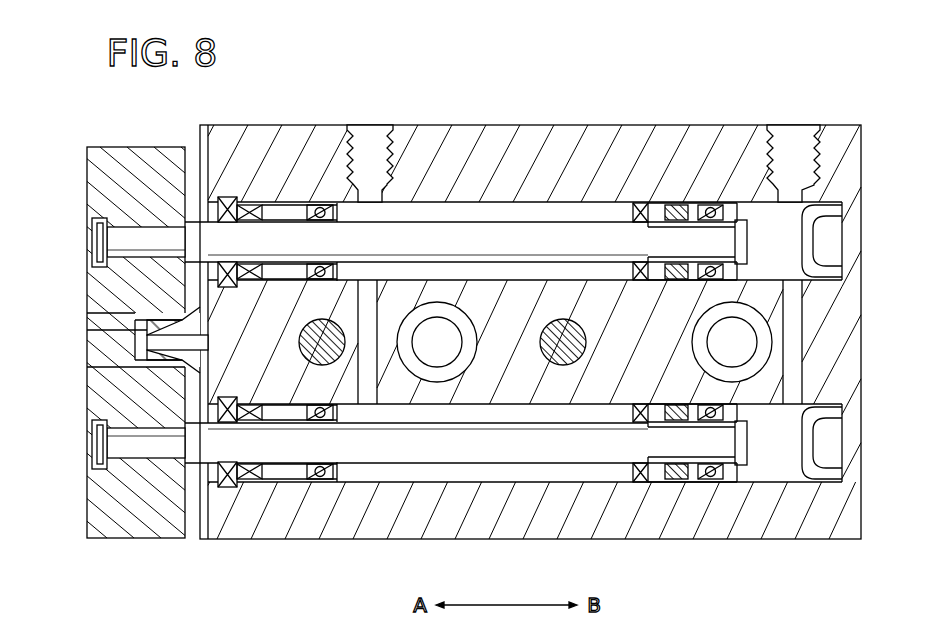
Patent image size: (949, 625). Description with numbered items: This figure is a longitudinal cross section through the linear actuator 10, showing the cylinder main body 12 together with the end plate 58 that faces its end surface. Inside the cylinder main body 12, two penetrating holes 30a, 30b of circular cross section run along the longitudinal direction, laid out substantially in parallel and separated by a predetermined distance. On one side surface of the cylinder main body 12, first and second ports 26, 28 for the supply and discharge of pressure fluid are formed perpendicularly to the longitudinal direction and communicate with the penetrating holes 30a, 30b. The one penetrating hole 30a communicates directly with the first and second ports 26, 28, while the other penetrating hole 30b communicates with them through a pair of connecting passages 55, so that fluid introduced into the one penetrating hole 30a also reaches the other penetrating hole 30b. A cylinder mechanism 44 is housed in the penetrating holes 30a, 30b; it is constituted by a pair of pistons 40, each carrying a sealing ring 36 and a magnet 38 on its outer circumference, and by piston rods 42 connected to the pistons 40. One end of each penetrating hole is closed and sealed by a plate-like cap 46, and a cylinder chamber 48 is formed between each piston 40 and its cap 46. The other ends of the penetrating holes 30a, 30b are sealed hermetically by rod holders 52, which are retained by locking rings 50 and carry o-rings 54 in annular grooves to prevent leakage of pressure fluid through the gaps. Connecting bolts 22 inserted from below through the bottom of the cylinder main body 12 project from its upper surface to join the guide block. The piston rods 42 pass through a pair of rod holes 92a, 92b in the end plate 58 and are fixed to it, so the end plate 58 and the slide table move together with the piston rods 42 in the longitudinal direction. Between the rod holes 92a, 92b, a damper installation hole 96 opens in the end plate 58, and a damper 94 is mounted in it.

The linear actuator 10 is at (764, 73).
The cylinder main body 12 is at (849, 545).
The connecting bolts 22 is at (328, 366).
The first port 26 is at (799, 128).
The second port 28 is at (372, 128).
The one penetrating hole 30a is at (480, 208).
The other penetrating hole 30b is at (478, 480).
The sealing ring 36 is at (705, 203).
The magnet 38 is at (655, 203).
The pistons 40 is at (745, 203).
The piston rods 42 is at (515, 237).
The cylinder mechanism 44 is at (388, 208).
The plate-like caps 46 is at (826, 247).
The cylinder chambers 48 is at (780, 228).
The locking rings 50 is at (222, 200).
The rod holders 52 is at (250, 205).
The o-rings 54 is at (318, 205).
The connecting passages 55 is at (383, 388).
The end plate 58 is at (89, 538).
The one rod hole 92a is at (90, 238).
The other rod hole 92b is at (90, 440).
The damper 94 is at (135, 331).
The damper installation hole 96 is at (87, 347).